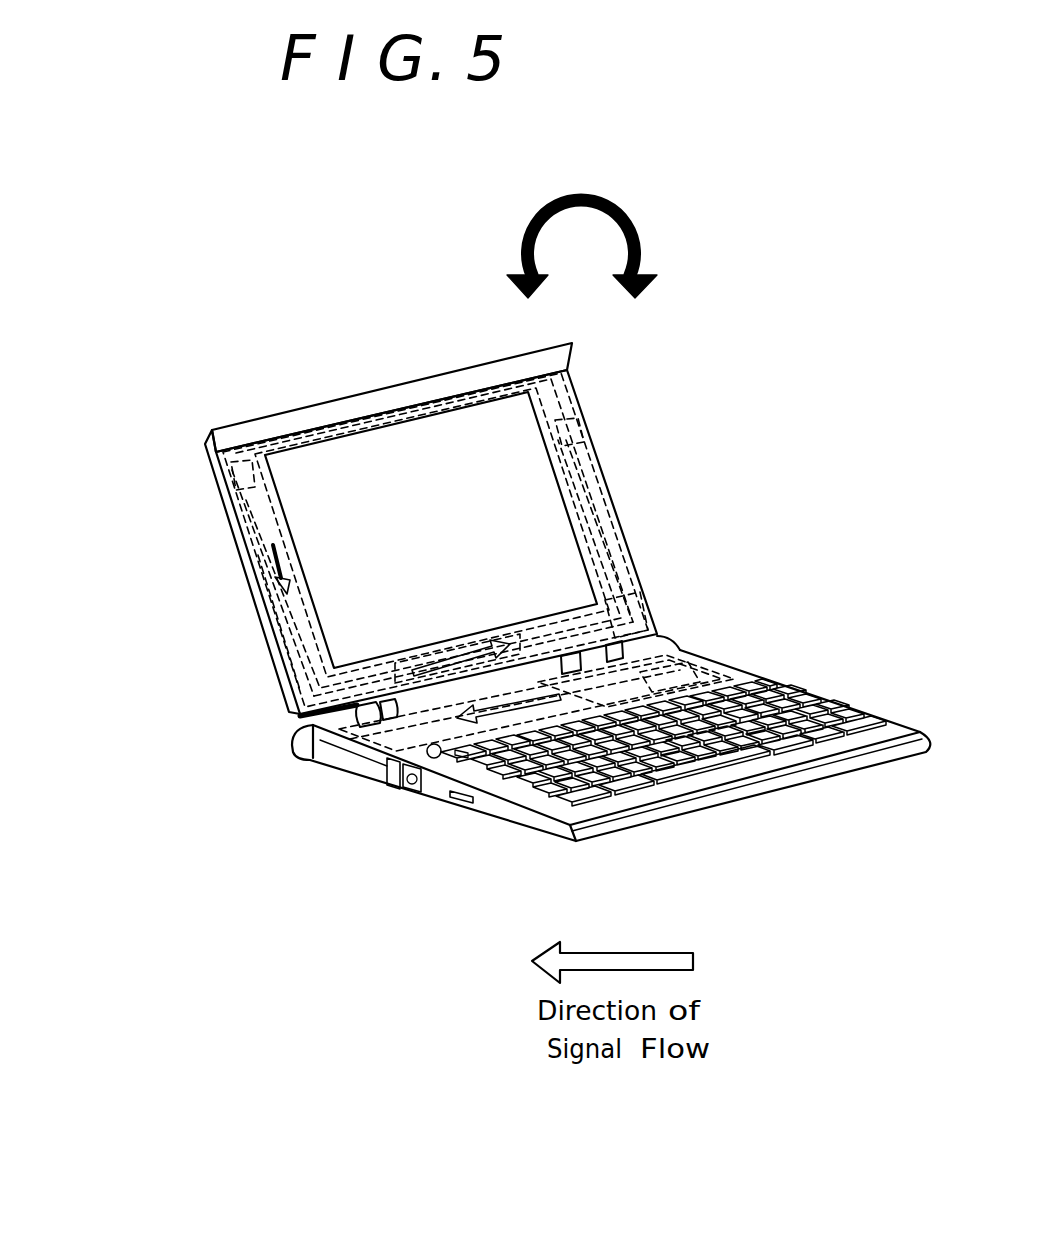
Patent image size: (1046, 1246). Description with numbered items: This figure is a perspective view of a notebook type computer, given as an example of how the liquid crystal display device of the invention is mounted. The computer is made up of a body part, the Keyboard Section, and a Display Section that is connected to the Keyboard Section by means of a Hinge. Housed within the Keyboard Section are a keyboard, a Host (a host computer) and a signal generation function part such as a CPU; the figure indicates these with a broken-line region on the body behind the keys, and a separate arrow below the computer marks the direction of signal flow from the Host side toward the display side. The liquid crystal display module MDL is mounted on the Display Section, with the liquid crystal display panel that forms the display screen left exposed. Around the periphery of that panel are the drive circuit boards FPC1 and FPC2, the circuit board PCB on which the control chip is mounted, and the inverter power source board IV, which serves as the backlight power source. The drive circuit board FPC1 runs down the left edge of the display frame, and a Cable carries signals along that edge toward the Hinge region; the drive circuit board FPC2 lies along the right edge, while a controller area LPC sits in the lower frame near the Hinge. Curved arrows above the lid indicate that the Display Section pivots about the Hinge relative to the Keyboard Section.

The display part Display Section is at (396, 493).
The drive circuit board FPC1 is at (246, 462).
The circuit board PCB is at (243, 488).
The inverter power source board IV is at (583, 445).
The drive circuit board FPC2 is at (620, 590).
The LCD panel controller LPC is at (630, 600).
The liquid crystal display module MDL is at (640, 620).
The host Host is at (690, 655).
The element CPU is at (690, 668).
The cable Cable is at (284, 596).
The hinge Hinge is at (390, 737).
The keyboard part Keyboard Section is at (611, 775).